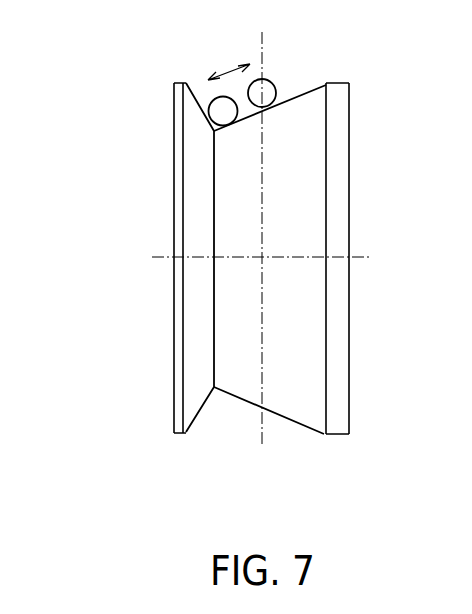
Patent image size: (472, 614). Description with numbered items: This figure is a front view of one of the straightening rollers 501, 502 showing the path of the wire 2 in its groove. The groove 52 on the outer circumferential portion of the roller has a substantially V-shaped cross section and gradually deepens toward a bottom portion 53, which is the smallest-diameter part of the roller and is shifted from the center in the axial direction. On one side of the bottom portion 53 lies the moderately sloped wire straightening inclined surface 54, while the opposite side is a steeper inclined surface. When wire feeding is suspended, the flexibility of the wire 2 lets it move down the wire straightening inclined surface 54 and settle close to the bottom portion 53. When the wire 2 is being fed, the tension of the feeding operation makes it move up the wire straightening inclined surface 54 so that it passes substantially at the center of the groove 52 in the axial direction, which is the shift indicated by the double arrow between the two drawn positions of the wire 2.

The first straightening roller 501 is at (224, 239).
The second straightening roller 502 is at (224, 239).
The wire 2 is at (213, 107).
The groove 52 is at (304, 168).
The bottom portion 53 is at (215, 264).
The wire straightening inclined surface 54 is at (292, 227).